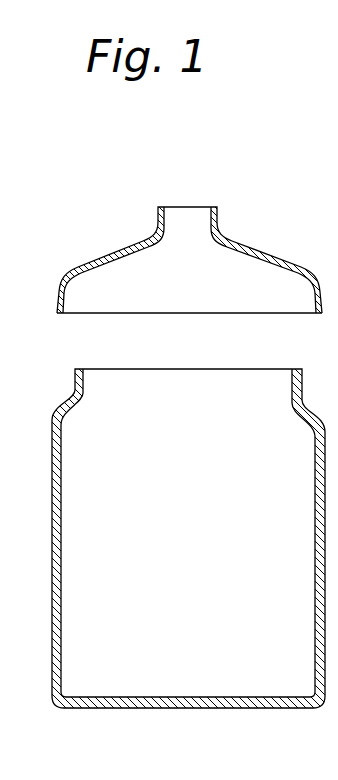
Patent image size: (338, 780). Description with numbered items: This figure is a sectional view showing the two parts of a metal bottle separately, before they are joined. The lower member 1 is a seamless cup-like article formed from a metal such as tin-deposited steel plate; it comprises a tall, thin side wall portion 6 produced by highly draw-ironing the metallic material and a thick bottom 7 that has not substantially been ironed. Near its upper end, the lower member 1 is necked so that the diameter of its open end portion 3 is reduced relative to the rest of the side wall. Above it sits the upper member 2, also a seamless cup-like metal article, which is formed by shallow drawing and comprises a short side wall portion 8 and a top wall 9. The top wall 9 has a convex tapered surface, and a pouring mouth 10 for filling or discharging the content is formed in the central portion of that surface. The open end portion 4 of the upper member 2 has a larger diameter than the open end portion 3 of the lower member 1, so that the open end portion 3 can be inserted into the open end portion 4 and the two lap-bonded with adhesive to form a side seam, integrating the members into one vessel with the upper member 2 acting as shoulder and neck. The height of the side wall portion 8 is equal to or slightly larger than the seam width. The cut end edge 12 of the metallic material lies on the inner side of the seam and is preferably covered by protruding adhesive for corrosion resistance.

The lower member 1 is at (192, 559).
The upper member 2 is at (198, 289).
The open end portion 3 is at (70, 392).
The open end portion 4 is at (58, 312).
The thin side wall portion 6 is at (52, 576).
The bottom 7 is at (203, 710).
The side wall portion 8 is at (59, 280).
The top wall 9 is at (121, 249).
The pouring mouth 10 is at (195, 207).
The cut end edge of a metallic material 12 is at (76, 371).